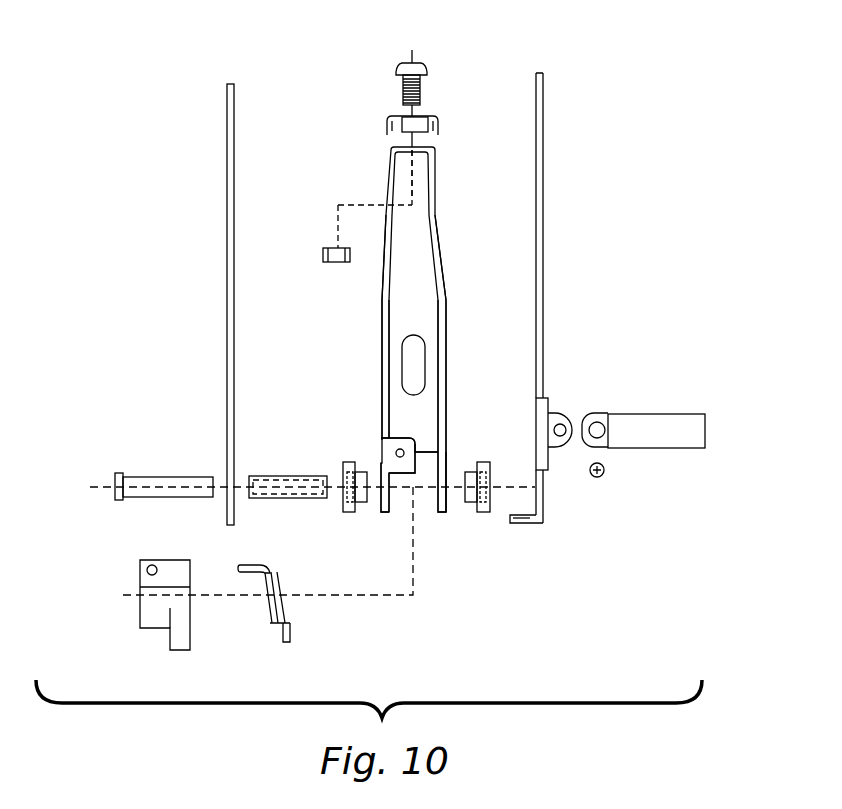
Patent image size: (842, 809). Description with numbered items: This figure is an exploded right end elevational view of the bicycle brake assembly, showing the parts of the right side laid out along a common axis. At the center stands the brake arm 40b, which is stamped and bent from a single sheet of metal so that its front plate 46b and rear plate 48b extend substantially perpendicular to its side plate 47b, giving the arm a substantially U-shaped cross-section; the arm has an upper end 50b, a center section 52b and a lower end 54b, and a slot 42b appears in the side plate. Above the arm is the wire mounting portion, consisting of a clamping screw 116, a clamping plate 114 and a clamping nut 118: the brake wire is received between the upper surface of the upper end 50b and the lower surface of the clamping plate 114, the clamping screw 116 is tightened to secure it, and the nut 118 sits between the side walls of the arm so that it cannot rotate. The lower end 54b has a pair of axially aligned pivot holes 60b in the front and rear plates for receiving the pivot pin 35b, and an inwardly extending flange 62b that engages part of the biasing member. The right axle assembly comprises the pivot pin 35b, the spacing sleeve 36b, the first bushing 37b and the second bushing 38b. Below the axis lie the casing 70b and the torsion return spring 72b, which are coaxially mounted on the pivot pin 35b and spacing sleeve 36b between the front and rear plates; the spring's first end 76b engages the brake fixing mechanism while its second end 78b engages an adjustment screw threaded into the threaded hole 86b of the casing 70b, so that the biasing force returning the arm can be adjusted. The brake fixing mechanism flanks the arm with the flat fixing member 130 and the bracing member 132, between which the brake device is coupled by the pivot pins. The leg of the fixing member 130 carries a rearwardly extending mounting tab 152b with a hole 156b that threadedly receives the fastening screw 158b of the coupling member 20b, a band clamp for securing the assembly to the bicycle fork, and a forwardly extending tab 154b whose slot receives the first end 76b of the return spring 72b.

The clamping screw 116 is at (425, 62).
The clamping plate 114 is at (437, 119).
The upper end 50b is at (418, 188).
The brake arm 40b is at (445, 233).
The clamping nut 118 is at (323, 252).
The rear plate 48b is at (442, 298).
The front plate 46b is at (381, 312).
The side plate 47b is at (413, 376).
The slot 42b is at (401, 352).
The center section 52b is at (426, 352).
The lower end 54b is at (425, 438).
The first bushing 37b is at (354, 461).
The second bushing 38b is at (481, 460).
The spacing sleeve 36b is at (290, 474).
The pivot pin 35b is at (187, 475).
The threaded hole 86b is at (146, 562).
The casing 70b is at (140, 615).
The second end 78b is at (248, 562).
The return spring 72b is at (270, 625).
The first end 76b is at (288, 643).
The inwardly extending flange 62b is at (407, 473).
The pivot holes 60b is at (380, 490).
The tab 154b is at (528, 527).
The fastening screw 158b is at (603, 477).
The coupling member 20b is at (673, 448).
The mounting tab 152b is at (567, 412).
The hole 156b is at (587, 417).
The fixing member 130 is at (546, 222).
The bracing member 132 is at (227, 193).